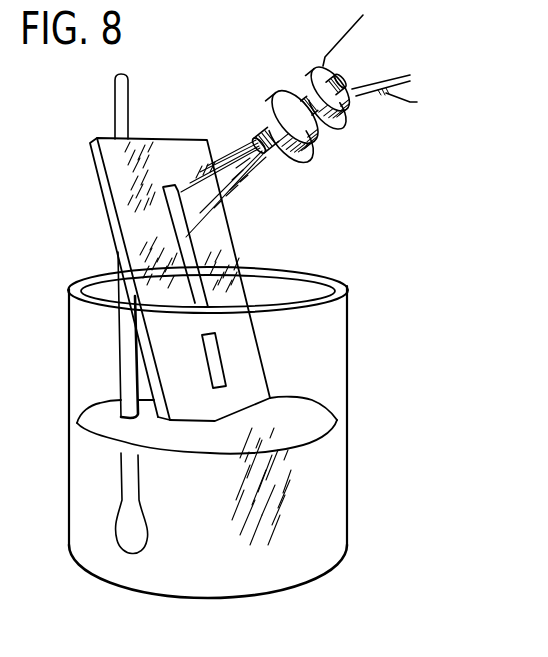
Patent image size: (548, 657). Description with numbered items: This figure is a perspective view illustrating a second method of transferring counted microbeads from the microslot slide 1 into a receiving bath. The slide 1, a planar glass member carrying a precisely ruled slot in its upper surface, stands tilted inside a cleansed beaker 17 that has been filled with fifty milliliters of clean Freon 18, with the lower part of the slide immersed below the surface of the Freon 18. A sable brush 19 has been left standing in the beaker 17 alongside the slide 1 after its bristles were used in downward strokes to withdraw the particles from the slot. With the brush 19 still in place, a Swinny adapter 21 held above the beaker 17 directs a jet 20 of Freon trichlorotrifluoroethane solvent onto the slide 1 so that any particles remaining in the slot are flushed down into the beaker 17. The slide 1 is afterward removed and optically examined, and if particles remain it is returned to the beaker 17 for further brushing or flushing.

The microslot slide 1 is at (100, 186).
The beaker 17 is at (333, 283).
The clean Freon 18 is at (310, 412).
The sable brush 19 is at (116, 103).
The jet 20 is at (257, 176).
The Swinny adapter 21 is at (323, 128).